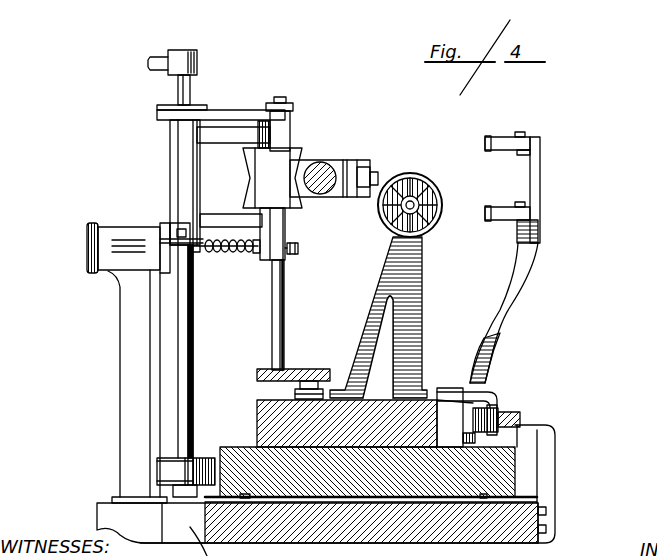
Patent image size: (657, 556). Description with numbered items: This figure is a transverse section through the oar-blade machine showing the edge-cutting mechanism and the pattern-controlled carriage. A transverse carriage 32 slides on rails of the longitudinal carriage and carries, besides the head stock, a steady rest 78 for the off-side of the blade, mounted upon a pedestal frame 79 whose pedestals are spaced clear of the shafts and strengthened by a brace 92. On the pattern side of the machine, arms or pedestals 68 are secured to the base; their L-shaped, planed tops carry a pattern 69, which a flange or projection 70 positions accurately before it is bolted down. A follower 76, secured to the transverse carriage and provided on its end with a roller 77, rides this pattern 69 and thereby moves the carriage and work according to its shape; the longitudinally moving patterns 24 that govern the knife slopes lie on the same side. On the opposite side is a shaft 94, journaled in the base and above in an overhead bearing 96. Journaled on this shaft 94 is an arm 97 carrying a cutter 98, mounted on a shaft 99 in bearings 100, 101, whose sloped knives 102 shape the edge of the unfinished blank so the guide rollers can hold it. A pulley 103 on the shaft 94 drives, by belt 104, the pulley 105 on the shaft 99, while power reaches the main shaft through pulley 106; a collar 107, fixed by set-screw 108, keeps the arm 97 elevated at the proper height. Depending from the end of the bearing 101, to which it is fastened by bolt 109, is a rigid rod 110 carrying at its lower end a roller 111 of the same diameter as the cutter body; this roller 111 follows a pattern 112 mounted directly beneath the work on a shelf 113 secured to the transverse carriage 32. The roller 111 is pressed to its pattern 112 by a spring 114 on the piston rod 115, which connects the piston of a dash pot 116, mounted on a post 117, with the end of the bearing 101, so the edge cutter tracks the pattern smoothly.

The pattern 24 is at (501, 134).
The transverse carriage 32 is at (257, 427).
The arm or pedestal 68 is at (548, 477).
The pattern 69 is at (503, 412).
The flange or projection 70 is at (527, 413).
The follower 76 is at (451, 392).
The roller 77 is at (500, 410).
The steady rest 78 is at (416, 172).
The pedestal frame 79 is at (416, 270).
The brace 92 is at (378, 303).
The shaft 94 is at (190, 88).
The bearing 96 is at (198, 58).
The arm 97 is at (218, 138).
The cutter 98 is at (263, 178).
The shaft 99 is at (286, 100).
The bearing 100 is at (290, 132).
The bearing 101 is at (287, 212).
The knife 102 is at (333, 160).
The pulley 103 is at (160, 118).
The belt 104 is at (232, 108).
The pulley 105 is at (293, 106).
The pulley 106 is at (170, 470).
The collar 107 is at (170, 223).
The set-screw 108 is at (190, 253).
The bolt 109 is at (298, 248).
The rigid rod 110 is at (280, 280).
The roller 111 is at (290, 365).
The pattern 112 is at (306, 381).
The shelf 113 is at (296, 392).
The spring 114 is at (244, 262).
The piston rod 115 is at (238, 237).
The dash pot 116 is at (83, 242).
The post 117 is at (137, 342).